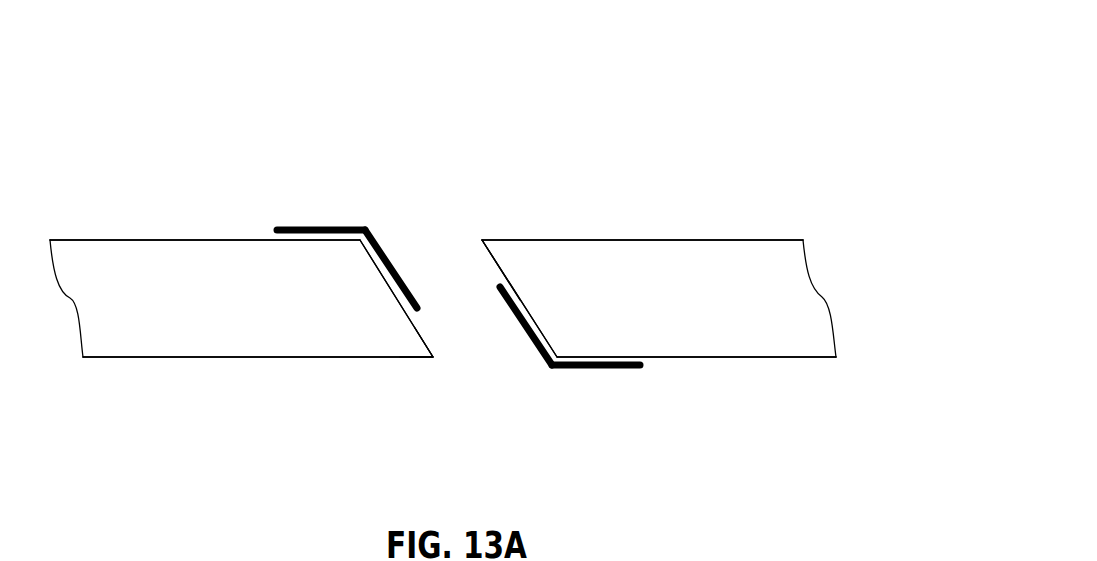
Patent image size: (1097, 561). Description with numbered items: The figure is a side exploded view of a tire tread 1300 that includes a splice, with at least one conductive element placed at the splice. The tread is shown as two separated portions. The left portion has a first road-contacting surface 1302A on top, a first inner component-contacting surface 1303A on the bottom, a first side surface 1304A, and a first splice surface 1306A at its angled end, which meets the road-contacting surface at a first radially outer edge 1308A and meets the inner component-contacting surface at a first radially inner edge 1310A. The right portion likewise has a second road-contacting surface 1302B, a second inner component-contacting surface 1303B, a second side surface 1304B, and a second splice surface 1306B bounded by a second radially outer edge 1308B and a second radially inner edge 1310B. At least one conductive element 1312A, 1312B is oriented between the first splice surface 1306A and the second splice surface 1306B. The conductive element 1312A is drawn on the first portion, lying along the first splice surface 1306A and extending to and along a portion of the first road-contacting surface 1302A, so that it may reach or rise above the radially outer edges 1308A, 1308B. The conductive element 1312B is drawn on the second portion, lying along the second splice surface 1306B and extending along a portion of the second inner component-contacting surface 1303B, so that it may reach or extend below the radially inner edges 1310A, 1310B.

The tire tread 1300 is at (703, 105).
The first road-contacting surface 1302A is at (200, 243).
The second road-contacting surface 1302B is at (730, 243).
The first inner component-contacting surface 1303A is at (193, 357).
The second inner component-contacting surface 1303B is at (783, 357).
The first side surface 1304A is at (103, 272).
The second side surface 1304B is at (641, 270).
The first splice surface 1306A is at (405, 318).
The second splice surface 1306B is at (519, 297).
The first radially outer edge 1308A is at (372, 243).
The second radially outer edge 1308B is at (487, 242).
The first radially inner edge 1310A is at (433, 358).
The second radially inner edge 1310B is at (616, 368).
The conductive element 1312A is at (385, 255).
The conductive element 1312B is at (527, 320).